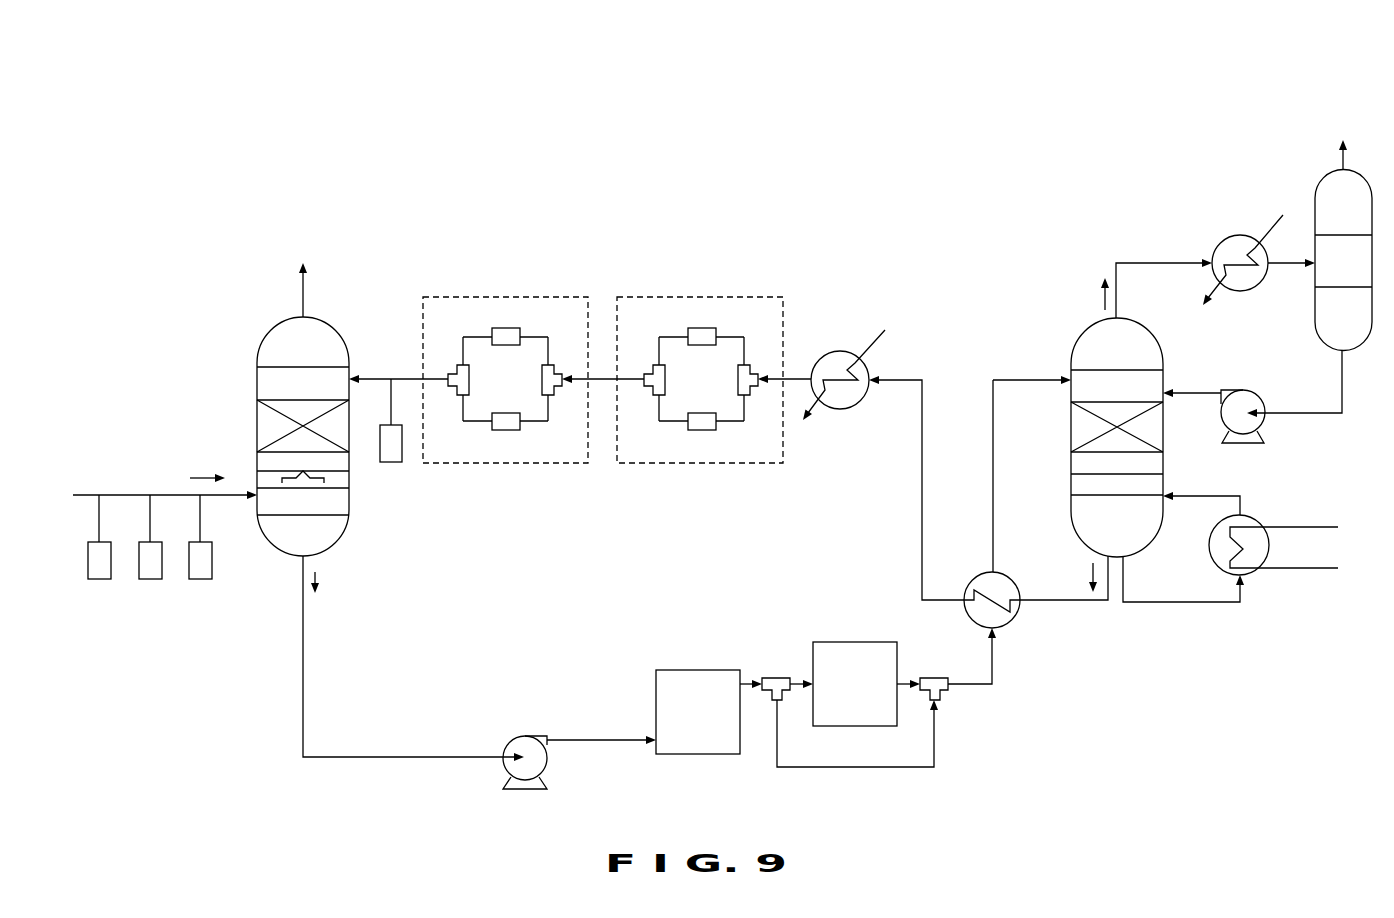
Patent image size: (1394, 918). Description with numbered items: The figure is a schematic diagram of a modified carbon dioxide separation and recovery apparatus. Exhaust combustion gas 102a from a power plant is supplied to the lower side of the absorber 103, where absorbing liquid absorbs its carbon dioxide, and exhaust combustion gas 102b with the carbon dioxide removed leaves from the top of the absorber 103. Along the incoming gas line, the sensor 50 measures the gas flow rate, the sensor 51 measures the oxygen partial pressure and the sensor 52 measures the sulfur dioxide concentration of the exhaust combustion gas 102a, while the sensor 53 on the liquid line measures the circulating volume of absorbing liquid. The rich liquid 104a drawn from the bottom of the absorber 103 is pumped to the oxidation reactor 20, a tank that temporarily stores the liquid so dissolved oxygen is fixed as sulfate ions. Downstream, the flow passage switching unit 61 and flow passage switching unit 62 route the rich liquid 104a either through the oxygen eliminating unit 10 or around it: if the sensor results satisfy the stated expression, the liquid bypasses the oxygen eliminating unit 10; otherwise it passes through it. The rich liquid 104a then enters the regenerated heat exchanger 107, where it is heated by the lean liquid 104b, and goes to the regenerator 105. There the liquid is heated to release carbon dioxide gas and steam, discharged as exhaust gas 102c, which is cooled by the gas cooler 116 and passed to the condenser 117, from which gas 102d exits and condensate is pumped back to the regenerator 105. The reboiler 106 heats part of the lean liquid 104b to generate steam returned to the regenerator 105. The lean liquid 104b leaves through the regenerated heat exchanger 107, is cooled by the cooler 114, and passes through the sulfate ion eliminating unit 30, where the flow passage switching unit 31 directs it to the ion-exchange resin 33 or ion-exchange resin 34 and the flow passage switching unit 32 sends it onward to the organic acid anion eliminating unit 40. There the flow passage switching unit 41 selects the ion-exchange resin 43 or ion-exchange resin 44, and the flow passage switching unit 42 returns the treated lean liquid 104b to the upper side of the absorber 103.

The oxygen eliminating unit 10 is at (848, 641).
The oxidation reactor 20 is at (697, 669).
The sulfate ion eliminating unit 30 is at (700, 351).
The flow passage switching unit 31 is at (749, 384).
The flow passage switching unit 32 is at (647, 378).
The ion-exchange resin 33 is at (703, 332).
The ion-exchange resin 34 is at (700, 428).
The organic acid anion eliminating unit 40 is at (505, 351).
The flow passage switching unit 41 is at (553, 384).
The flow passage switching unit 42 is at (451, 378).
The ion-exchange resin 43 is at (507, 332).
The ion-exchange resin 44 is at (504, 428).
The sensor 50 is at (99, 579).
The sensor 51 is at (150, 579).
The sensor 52 is at (200, 579).
The sensor 53 is at (391, 462).
The flow passage switching unit 61 is at (780, 677).
The flow passage switching unit 62 is at (947, 693).
The exhaust combustion gas 102a is at (207, 478).
The exhaust combustion gas 102b is at (302, 290).
The exhaust gas 102c is at (1101, 298).
The gas outlet line 102d is at (1338, 163).
The absorber 103 is at (262, 343).
The rich liquid 104a is at (316, 577).
The lean liquid 104b is at (1088, 578).
The regenerator 105 is at (1160, 344).
The reboiler 106 is at (1210, 556).
The regenerated heat exchanger 107 is at (1010, 620).
The cooler 114 is at (840, 351).
The gas cooler 116 is at (1219, 241).
The condenser 117 is at (1314, 192).